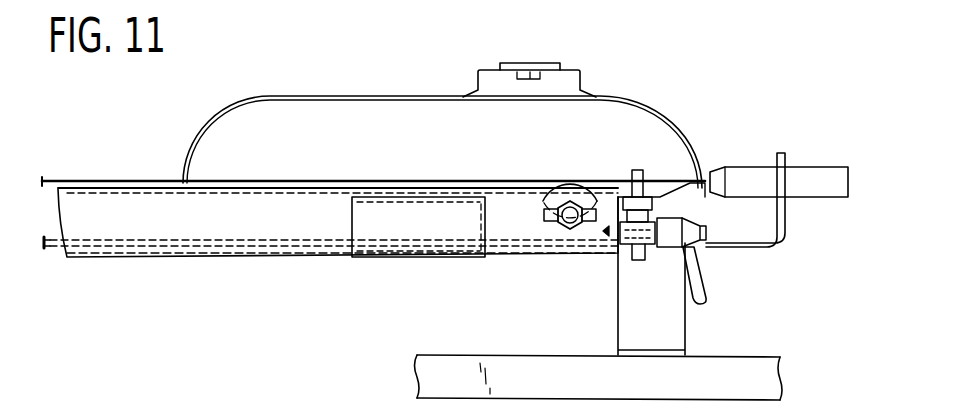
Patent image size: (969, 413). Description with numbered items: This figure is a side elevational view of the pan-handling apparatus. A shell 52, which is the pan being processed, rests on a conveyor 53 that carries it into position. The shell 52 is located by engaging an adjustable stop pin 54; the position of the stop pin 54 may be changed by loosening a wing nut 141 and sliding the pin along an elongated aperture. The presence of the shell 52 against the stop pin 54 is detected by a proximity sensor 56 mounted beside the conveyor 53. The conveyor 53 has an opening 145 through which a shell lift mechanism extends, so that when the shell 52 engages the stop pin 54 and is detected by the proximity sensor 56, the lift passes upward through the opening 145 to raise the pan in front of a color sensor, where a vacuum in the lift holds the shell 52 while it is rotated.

The shell 52 is at (207, 122).
The conveyor 53 is at (121, 176).
The adjustable stop pin 54 is at (648, 176).
The proximity sensor 56 is at (752, 167).
The wing nut 141 is at (700, 268).
The opening 145 is at (352, 224).